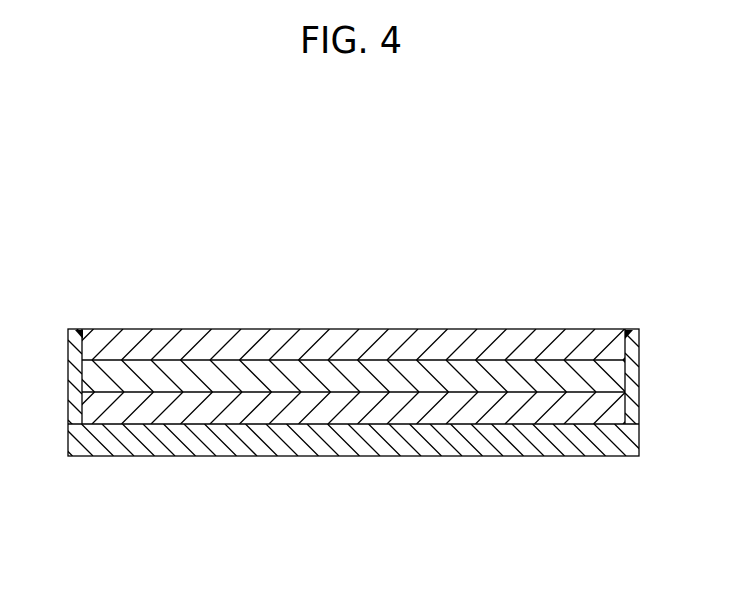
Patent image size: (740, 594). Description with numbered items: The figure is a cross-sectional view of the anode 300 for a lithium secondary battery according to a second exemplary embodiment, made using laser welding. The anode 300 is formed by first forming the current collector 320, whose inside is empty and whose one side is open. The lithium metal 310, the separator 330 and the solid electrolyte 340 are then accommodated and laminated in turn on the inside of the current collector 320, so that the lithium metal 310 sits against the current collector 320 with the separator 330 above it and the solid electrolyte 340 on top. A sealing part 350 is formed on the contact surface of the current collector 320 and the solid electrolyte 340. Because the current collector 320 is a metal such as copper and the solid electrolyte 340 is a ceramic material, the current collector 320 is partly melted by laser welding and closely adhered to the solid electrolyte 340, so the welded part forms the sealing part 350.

The anode 300 is at (562, 172).
The lithium metal 310 is at (290, 407).
The current collector 320 is at (405, 448).
The separator 330 is at (385, 375).
The solid electrolyte 340 is at (475, 345).
The sealing part 350 is at (79, 329).